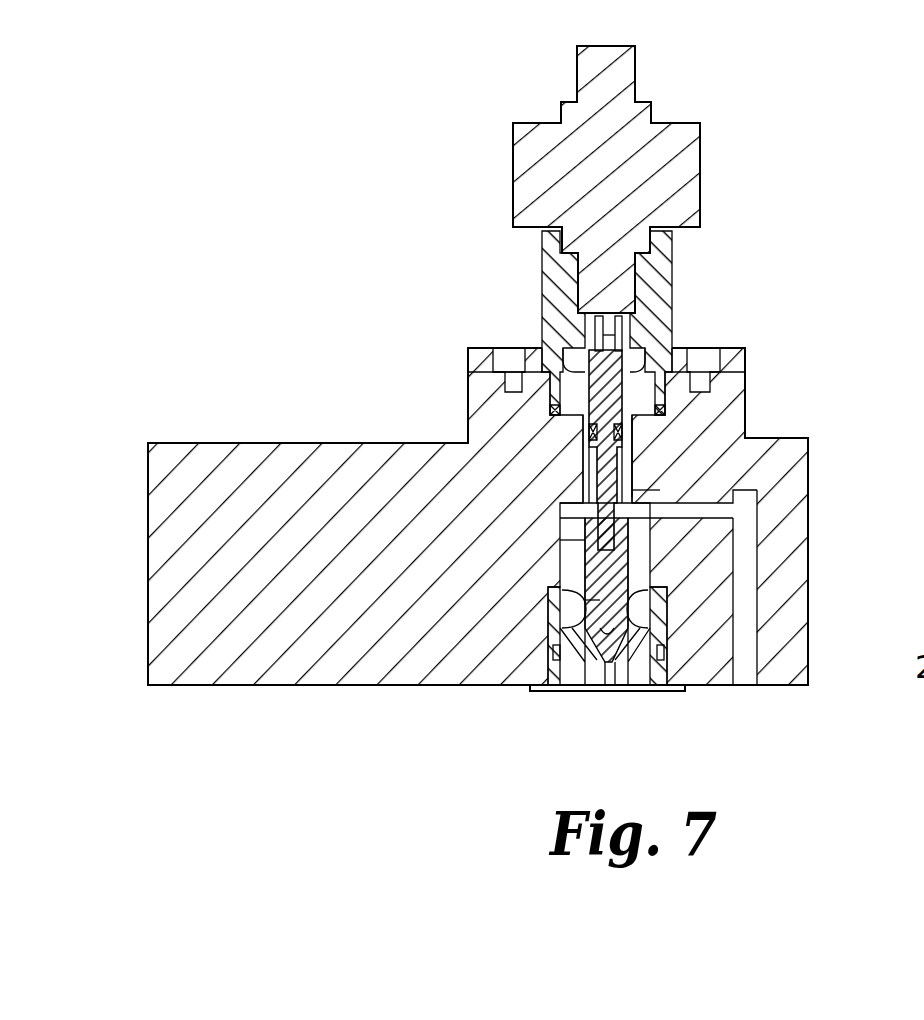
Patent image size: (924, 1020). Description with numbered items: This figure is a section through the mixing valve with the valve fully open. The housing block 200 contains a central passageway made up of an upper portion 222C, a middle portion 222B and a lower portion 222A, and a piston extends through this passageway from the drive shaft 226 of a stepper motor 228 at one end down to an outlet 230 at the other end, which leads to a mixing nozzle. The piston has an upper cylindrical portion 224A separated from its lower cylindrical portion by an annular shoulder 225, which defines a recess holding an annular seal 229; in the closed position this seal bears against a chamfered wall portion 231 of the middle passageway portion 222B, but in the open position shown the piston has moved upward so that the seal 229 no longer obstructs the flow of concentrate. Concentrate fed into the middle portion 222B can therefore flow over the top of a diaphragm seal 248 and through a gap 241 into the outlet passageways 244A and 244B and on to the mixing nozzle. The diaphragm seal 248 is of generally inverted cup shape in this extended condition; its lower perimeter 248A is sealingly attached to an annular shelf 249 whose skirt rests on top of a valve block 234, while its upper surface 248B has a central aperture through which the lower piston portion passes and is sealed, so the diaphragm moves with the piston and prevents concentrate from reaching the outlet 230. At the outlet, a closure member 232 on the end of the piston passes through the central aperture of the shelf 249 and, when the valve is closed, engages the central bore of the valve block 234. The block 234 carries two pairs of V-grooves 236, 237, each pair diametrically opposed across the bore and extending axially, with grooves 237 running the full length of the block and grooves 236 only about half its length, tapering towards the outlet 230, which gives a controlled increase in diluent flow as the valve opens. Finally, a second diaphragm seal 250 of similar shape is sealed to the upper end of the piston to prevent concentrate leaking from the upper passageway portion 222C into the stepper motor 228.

The housing block 200 is at (826, 358).
The lower portion of central passageway 222A is at (550, 565).
The middle portion of central passageway 222B is at (640, 470).
The upper portion of central passageway 222C is at (548, 410).
The upper cylindrical portion of piston 224A is at (632, 378).
The annular shoulder 225 is at (660, 410).
The drive shaft 226 is at (607, 318).
The stepper motor 228 is at (672, 174).
The annular seal 229 is at (613, 391).
The outlet 230 is at (623, 690).
The chamfered wall portion 231 is at (583, 480).
The closure member 232 is at (560, 585).
The valve block 234 is at (575, 675).
The V-grooves 236 is at (565, 628).
The V-grooves 237 is at (606, 690).
The gap 241 is at (640, 497).
The outlet passageway 244A is at (700, 510).
The outlet passageway 244B is at (743, 598).
The diaphragm seal 248 is at (640, 560).
The lower perimeter of diaphragm seal 248A is at (562, 605).
The upper surface of diaphragm seal 248B is at (568, 542).
The annular shelf 249 is at (722, 686).
The second diaphragm seal 250 is at (495, 362).